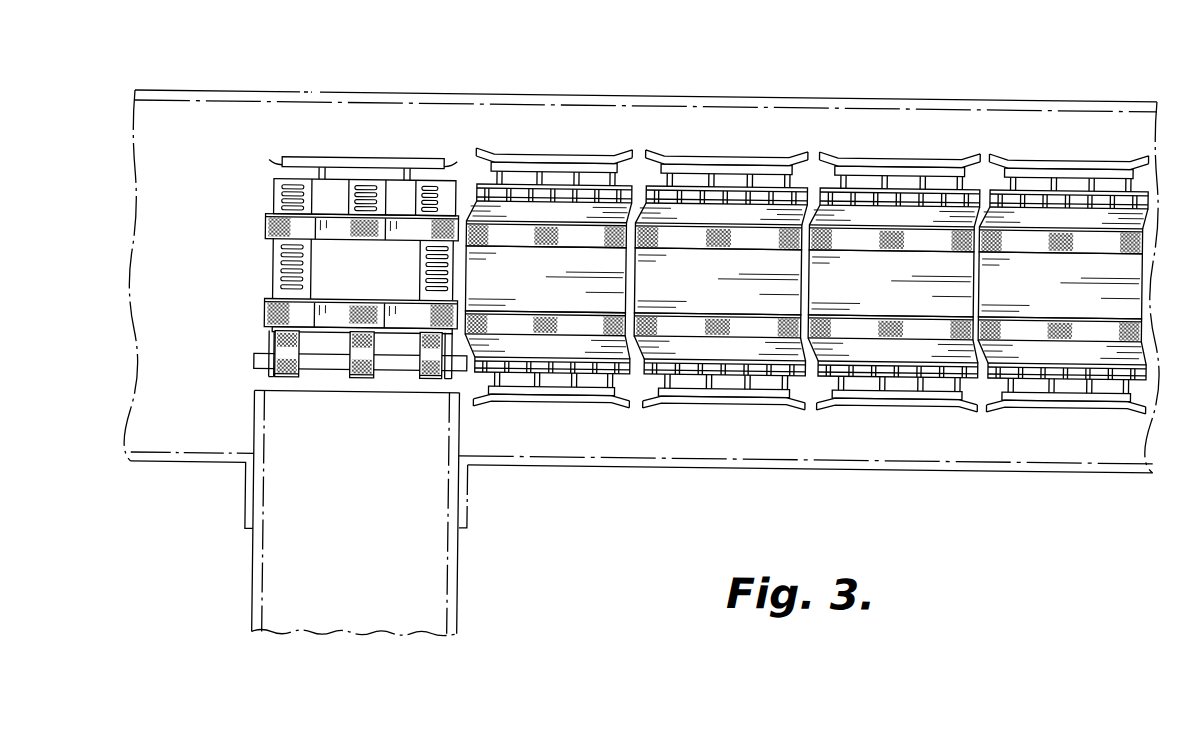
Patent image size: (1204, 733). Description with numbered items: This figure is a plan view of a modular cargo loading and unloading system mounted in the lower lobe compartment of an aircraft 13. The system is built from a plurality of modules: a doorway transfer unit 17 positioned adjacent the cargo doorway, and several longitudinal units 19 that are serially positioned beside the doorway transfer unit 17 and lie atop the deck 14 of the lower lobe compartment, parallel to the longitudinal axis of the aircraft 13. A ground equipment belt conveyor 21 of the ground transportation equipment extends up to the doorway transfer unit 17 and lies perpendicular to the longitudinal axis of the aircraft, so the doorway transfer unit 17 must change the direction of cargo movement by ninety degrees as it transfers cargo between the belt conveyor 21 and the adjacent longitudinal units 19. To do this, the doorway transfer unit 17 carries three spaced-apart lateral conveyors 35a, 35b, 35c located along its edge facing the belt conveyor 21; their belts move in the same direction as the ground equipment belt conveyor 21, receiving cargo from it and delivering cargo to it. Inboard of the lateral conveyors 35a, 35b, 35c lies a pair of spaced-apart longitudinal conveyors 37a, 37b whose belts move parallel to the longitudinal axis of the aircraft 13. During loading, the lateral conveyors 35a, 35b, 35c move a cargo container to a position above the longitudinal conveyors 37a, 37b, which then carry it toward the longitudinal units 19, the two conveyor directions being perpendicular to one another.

The aircraft 13 is at (328, 94).
The deck 14 is at (963, 440).
The doorway transfer unit 17 is at (329, 243).
The longitudinal units 19 is at (572, 148).
The ground equipment belt conveyor 21 is at (423, 572).
The lateral conveyor 35a is at (292, 377).
The lateral conveyor 35b is at (362, 377).
The lateral conveyor 35c is at (432, 376).
The longitudinal conveyor 37a is at (270, 311).
The longitudinal conveyor 37b is at (275, 226).